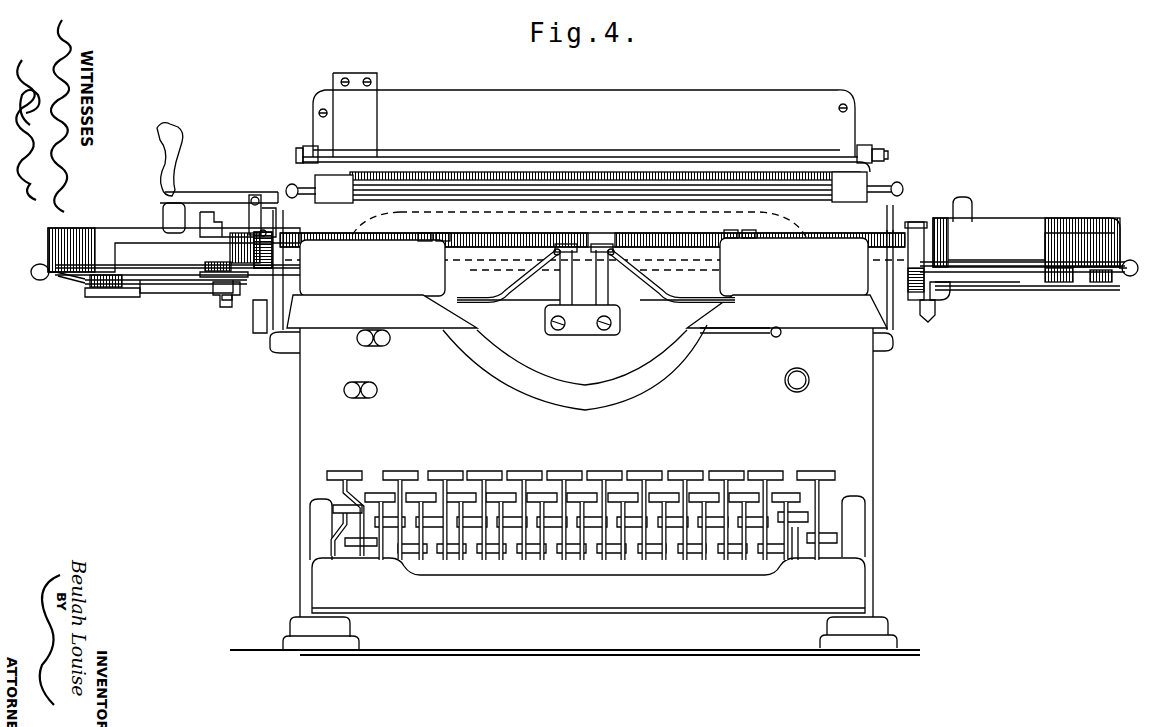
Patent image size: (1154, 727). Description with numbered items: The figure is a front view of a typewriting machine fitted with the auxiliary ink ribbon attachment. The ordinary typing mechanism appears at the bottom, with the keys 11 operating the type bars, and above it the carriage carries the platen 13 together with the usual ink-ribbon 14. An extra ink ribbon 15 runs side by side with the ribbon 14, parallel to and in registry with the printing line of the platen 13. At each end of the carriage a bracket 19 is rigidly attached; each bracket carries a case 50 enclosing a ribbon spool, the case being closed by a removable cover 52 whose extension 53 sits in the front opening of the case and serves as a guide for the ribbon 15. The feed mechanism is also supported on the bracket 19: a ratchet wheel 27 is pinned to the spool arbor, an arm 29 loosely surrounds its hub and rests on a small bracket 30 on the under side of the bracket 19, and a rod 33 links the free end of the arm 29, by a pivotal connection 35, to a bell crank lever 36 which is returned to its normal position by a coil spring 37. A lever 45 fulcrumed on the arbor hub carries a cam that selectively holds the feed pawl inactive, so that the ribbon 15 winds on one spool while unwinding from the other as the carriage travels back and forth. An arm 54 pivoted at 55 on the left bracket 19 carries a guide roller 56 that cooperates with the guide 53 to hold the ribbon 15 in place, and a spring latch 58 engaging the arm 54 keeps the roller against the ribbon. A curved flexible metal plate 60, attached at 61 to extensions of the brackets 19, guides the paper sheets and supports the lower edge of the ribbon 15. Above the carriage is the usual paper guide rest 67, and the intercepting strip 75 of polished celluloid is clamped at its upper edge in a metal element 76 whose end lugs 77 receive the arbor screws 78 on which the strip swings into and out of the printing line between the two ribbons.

The keys 11 is at (563, 470).
The platen 13 is at (541, 250).
The ink-ribbon 14 is at (692, 266).
The auxiliary ink ribbon 15 is at (515, 240).
The bracket 19 is at (157, 276).
The ratchet wheel 27 is at (85, 280).
The arm 29 is at (105, 288).
The small bracket 30 is at (128, 292).
The rod 33 is at (175, 292).
The pivotal connection 35 is at (945, 292).
The bell crank lever 36 is at (230, 310).
The coil spring 37 is at (218, 302).
The lever 45 is at (38, 281).
The case 50 is at (50, 250).
The cover 52 is at (136, 232).
The extension 53 is at (232, 240).
The arm 54 is at (205, 278).
The pivotal connection 55 is at (178, 264).
The guide roller 56 is at (252, 240).
The spring latch 58 is at (262, 302).
The curved flexible metal plate 60 is at (798, 224).
The attachment 61 is at (292, 272).
The paper guide rest 67 is at (655, 92).
The strip 75 is at (503, 175).
The metal element 76 is at (641, 157).
The lugs 77 is at (305, 148).
The arbor screws 78 is at (296, 155).